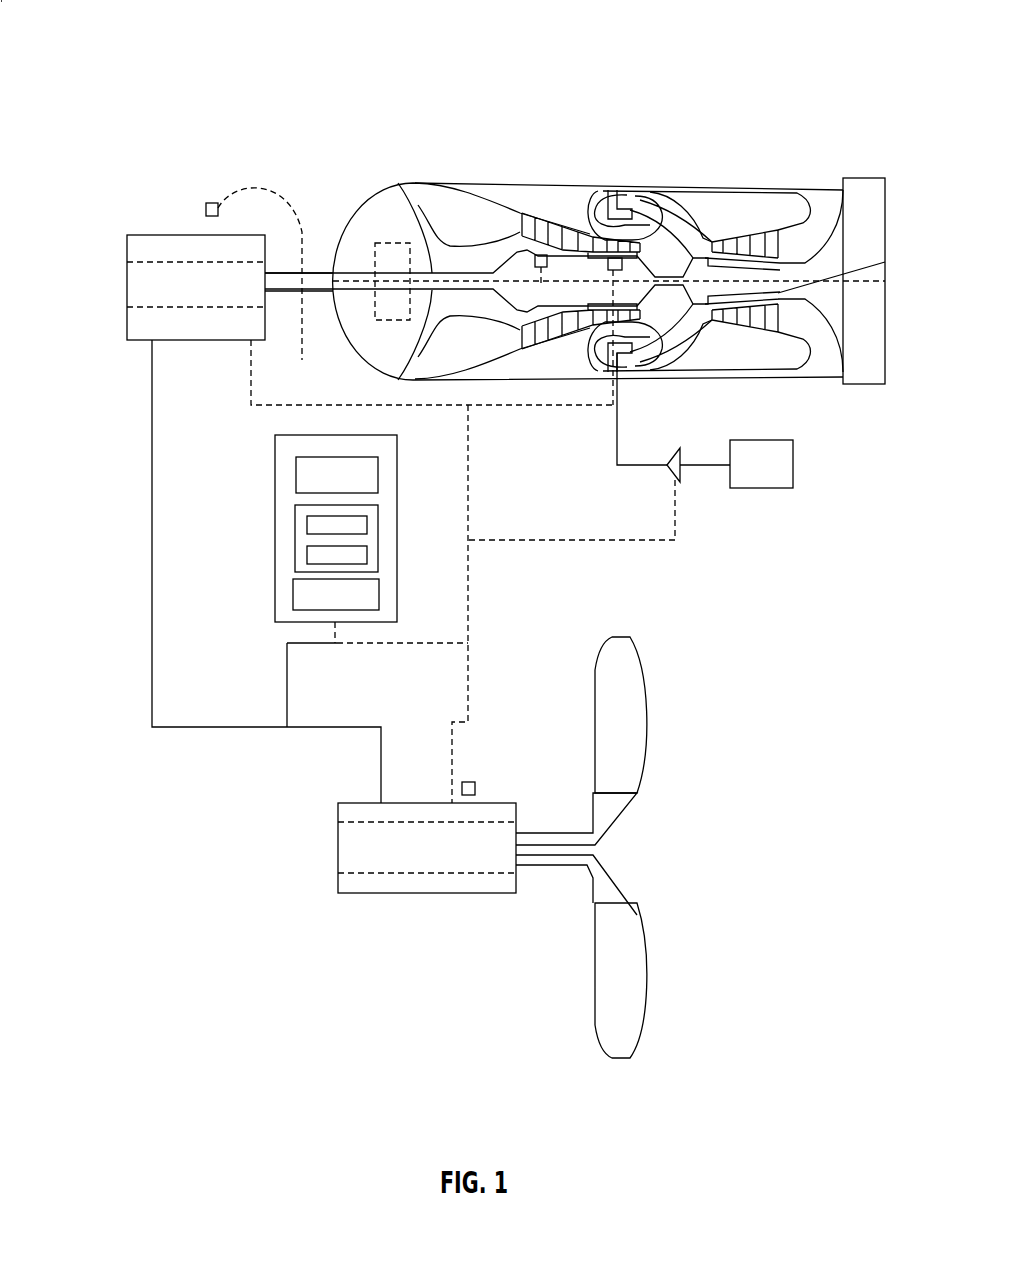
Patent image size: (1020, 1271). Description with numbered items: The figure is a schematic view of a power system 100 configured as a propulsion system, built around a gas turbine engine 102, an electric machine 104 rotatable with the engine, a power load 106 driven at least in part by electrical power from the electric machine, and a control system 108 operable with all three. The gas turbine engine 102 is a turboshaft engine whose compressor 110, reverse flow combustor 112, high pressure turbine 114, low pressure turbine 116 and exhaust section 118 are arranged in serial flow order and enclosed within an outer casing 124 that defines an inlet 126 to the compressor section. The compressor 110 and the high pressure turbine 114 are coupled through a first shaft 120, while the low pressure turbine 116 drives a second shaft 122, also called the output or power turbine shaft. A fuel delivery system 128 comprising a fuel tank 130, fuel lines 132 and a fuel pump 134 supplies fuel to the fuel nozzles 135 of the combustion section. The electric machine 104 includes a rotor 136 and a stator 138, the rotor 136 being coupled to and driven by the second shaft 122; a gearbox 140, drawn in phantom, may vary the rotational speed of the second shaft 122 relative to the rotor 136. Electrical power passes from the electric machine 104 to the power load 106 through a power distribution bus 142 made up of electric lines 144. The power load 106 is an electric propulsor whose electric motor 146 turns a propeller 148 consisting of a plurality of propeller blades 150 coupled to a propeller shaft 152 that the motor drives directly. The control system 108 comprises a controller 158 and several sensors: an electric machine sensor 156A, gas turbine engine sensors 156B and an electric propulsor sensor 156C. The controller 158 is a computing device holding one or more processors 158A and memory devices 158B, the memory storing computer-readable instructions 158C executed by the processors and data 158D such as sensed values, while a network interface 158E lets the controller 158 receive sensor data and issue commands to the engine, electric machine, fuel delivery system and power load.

The power system 100 is at (125, 62).
The gas turbine engine 102 is at (640, 100).
The electric machine 104 is at (100, 264).
The power load 106 is at (405, 1020).
The control system 108 is at (228, 500).
The compressor 110 is at (758, 225).
The reverse flow combustor 112 is at (648, 190).
The high pressure turbine 114 is at (604, 228).
The low pressure turbine 116 is at (540, 195).
The exhaust section 118 is at (458, 195).
The first shaft 120 is at (885, 262).
The second shaft 122 is at (398, 183).
The outer casing 124 is at (722, 190).
The inlet 126 is at (833, 188).
The fuel delivery system 128 is at (743, 510).
The fuel tank 130 is at (745, 482).
The fuel line 132 is at (616, 448).
The fuel pump 134 is at (683, 448).
The fuel nozzle 135 is at (612, 215).
The rotor 136 is at (147, 290).
The stator 138 is at (160, 242).
The gearbox 140 is at (350, 240).
The power distribution bus 142 is at (85, 601).
The electric line 144 is at (152, 670).
The electric motor 146 is at (410, 895).
The propeller 148 is at (672, 950).
The propeller blade 150 is at (642, 732).
The propeller shaft 152 is at (568, 885).
The electric machine sensor 156A is at (209, 203).
The gas turbine engine sensor 156B is at (612, 272).
The electric propulsor sensor 156C is at (474, 782).
The controller 158 is at (275, 436).
The processor 158A is at (380, 480).
The memory device 158B is at (380, 525).
The computer-readable instructions 158C is at (306, 526).
The data 158D is at (306, 562).
The network interface 158E is at (293, 598).